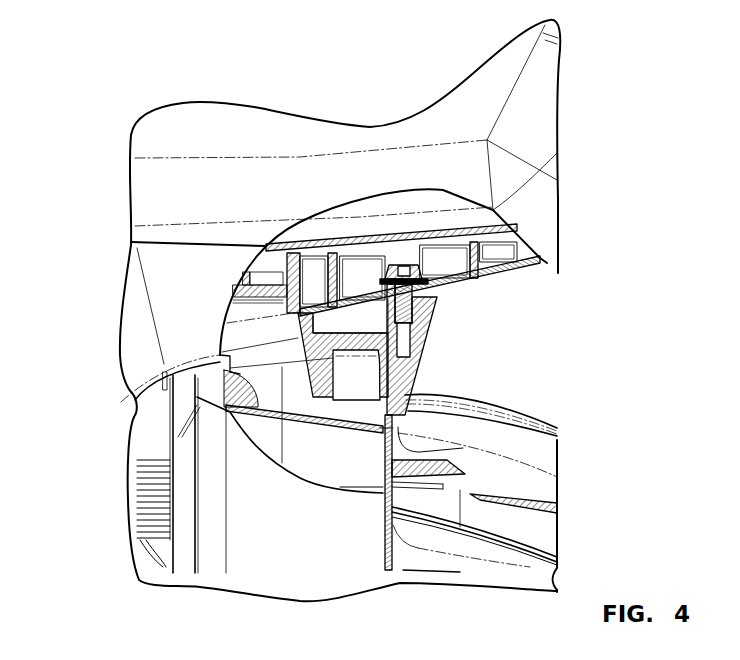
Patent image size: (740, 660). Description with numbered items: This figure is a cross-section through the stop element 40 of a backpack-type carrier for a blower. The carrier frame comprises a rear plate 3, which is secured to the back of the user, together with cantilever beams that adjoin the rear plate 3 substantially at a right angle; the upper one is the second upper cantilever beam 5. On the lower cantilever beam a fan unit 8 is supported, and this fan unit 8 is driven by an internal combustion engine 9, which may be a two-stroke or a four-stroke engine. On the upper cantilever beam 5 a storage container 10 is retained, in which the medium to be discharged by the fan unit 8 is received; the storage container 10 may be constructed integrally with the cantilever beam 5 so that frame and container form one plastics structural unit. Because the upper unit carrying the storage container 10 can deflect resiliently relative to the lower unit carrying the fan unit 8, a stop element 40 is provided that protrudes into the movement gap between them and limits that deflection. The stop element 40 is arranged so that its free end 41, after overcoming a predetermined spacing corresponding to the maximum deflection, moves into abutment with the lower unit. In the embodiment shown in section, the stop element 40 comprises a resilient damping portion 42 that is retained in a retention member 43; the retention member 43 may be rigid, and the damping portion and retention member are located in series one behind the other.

The rear plate 3 is at (130, 335).
The second upper cantilever beam 5 is at (430, 308).
The fan unit 8 is at (263, 503).
The internal combustion engine 9 is at (485, 523).
The storage container 10 is at (447, 157).
The stop element 40 is at (329, 327).
The free end 41 is at (463, 448).
The resilient damping portion 42 is at (410, 378).
The retention member 43 is at (420, 330).